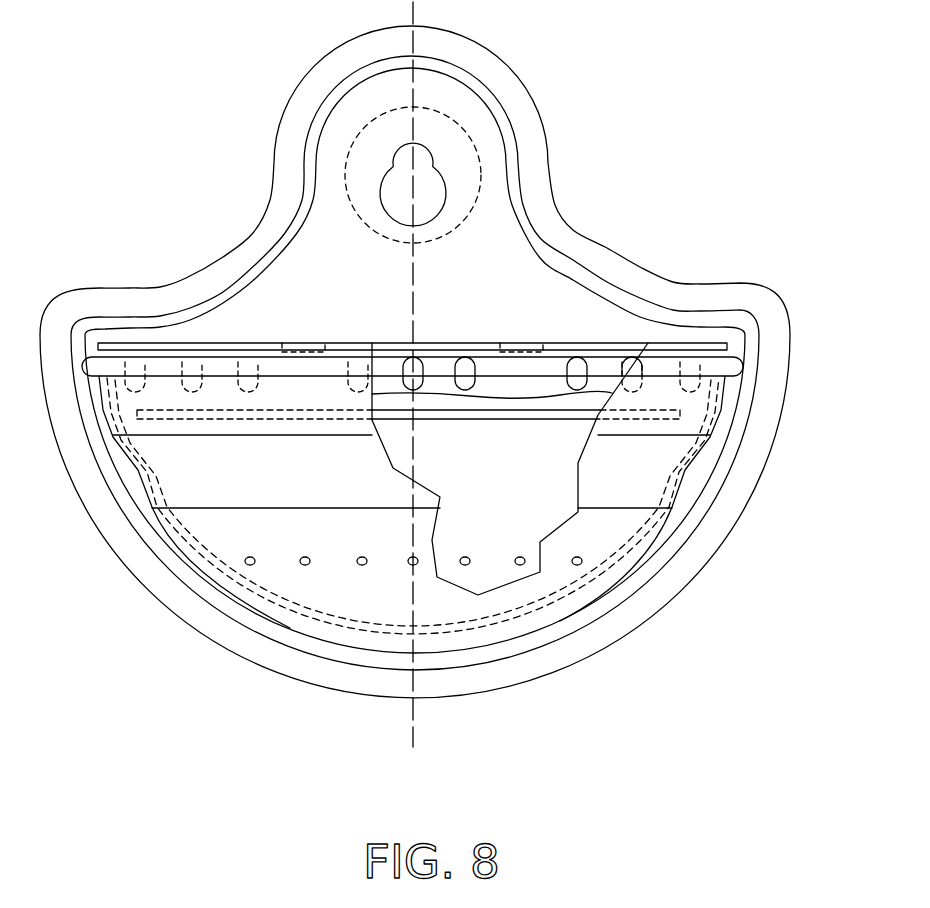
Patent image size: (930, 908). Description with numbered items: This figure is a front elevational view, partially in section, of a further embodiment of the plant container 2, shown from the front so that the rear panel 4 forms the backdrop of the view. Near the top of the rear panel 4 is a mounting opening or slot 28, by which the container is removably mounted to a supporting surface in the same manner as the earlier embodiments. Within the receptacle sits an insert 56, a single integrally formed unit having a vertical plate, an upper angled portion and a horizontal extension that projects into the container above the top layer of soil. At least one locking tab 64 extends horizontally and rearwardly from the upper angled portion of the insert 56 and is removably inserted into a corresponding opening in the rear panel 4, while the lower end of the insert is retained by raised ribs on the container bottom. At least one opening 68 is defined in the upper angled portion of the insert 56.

The plant container 2 is at (683, 597).
The rear panel 4 is at (355, 265).
The mounting opening or slot 28 is at (441, 172).
The insert 56 is at (398, 343).
The locking tab 64 is at (297, 343).
The opening 68 is at (577, 358).